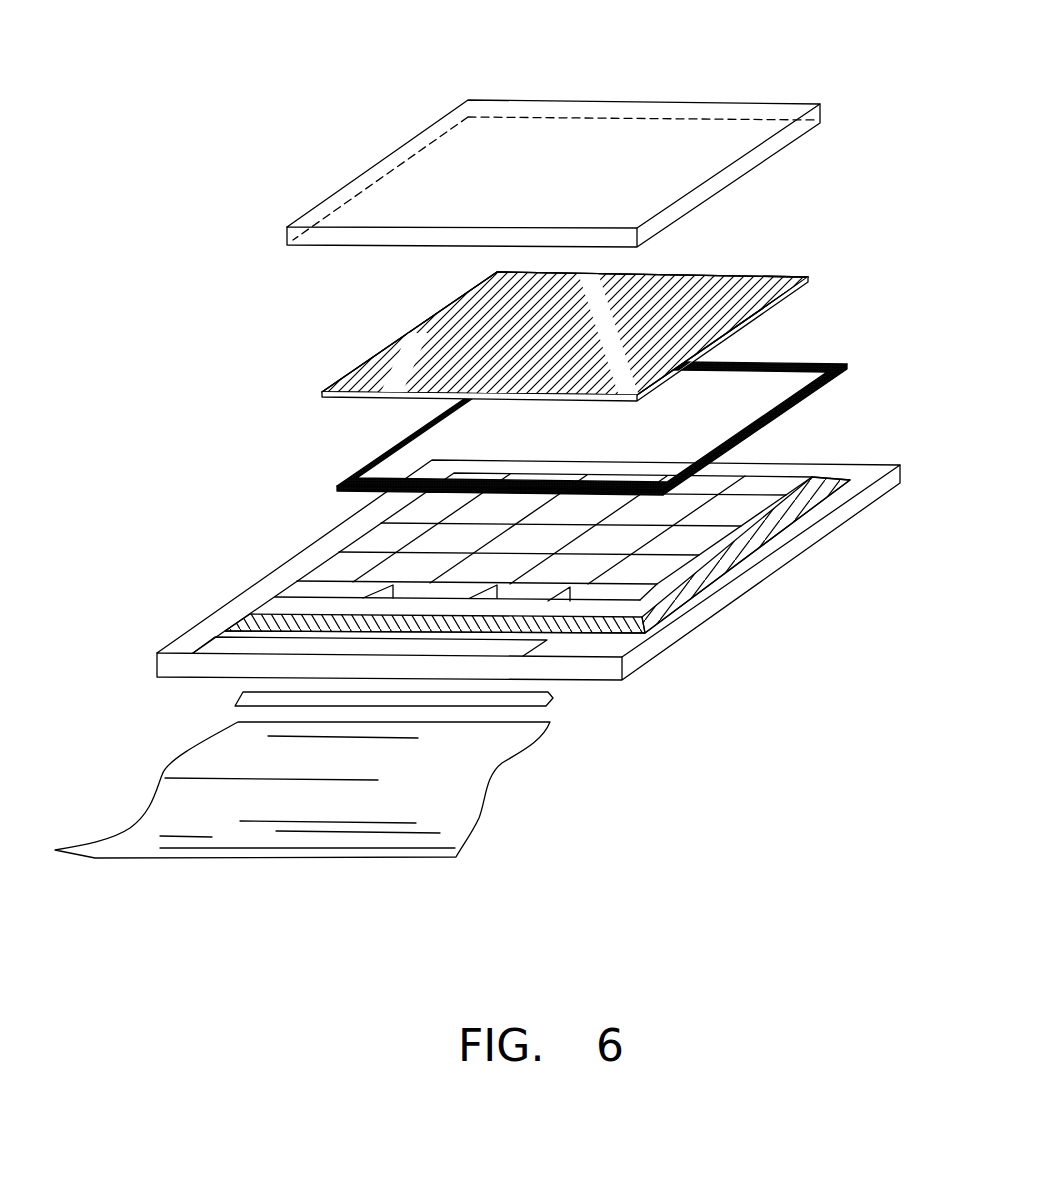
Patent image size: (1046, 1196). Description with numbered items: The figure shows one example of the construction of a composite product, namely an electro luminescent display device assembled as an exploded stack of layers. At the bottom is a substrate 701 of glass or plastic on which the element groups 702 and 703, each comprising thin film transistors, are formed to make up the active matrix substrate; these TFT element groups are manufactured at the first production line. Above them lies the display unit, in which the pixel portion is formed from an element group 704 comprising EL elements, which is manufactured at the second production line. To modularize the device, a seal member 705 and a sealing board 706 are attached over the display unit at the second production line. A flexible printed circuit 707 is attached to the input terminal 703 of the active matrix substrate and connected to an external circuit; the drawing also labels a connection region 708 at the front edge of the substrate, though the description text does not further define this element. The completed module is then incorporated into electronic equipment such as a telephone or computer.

The substrate 701 is at (773, 563).
The element group 702 is at (712, 490).
The element group (input terminal) 703 is at (722, 485).
The element group 704 is at (763, 295).
The seal member 705 is at (847, 366).
The sealing board 706 is at (753, 132).
The flexible printed circuit 707 is at (457, 800).
The connection terminal portion 708 is at (530, 640).